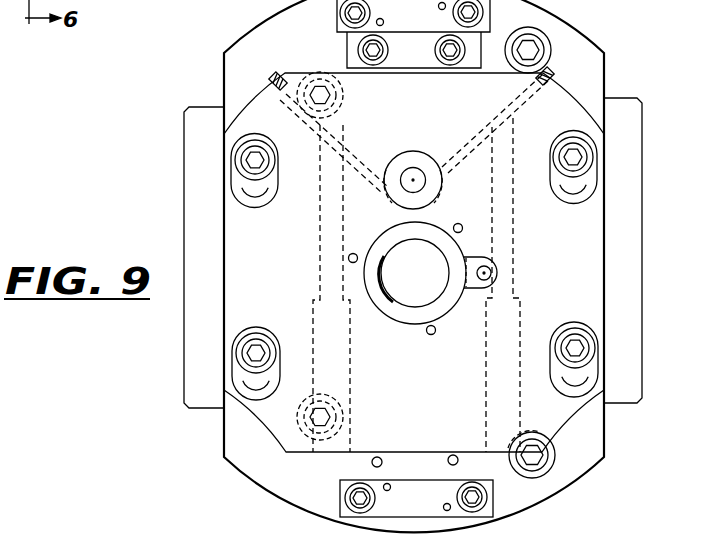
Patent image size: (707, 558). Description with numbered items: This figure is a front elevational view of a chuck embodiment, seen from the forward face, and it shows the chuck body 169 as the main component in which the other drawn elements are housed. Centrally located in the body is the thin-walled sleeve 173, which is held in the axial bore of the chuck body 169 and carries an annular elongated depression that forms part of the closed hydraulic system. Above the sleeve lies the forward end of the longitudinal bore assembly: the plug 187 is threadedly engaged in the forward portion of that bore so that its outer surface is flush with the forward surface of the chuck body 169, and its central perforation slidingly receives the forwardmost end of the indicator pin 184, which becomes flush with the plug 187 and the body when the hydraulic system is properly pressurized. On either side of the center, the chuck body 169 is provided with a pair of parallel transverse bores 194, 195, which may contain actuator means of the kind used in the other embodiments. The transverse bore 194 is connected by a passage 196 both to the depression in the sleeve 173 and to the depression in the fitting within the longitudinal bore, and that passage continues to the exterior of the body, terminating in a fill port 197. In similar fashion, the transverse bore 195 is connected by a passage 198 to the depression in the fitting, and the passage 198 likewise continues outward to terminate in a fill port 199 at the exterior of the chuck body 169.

The chuck body 169 is at (252, 110).
The sleeve 173 is at (390, 238).
The indicator pin 184 is at (402, 178).
The plug 187 is at (422, 158).
The transverse bore 194 is at (318, 271).
The transverse bore 195 is at (514, 248).
The passage 196 is at (359, 148).
The fill port 197 is at (272, 77).
The passage 198 is at (466, 168).
The fill port 199 is at (549, 74).